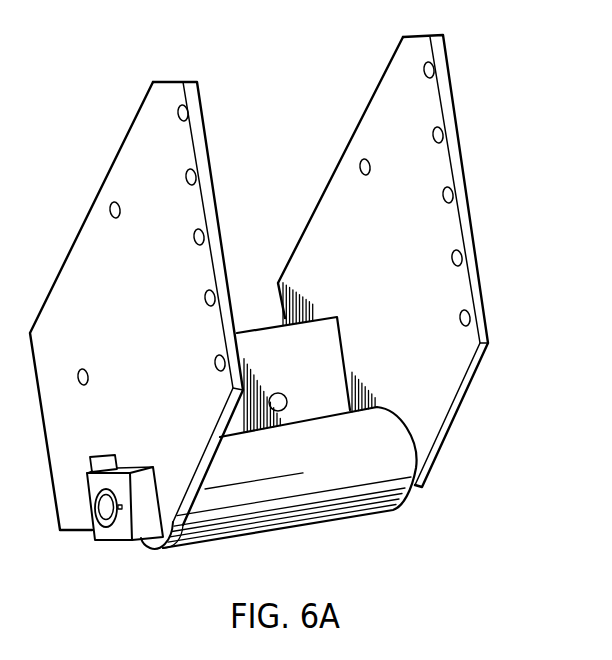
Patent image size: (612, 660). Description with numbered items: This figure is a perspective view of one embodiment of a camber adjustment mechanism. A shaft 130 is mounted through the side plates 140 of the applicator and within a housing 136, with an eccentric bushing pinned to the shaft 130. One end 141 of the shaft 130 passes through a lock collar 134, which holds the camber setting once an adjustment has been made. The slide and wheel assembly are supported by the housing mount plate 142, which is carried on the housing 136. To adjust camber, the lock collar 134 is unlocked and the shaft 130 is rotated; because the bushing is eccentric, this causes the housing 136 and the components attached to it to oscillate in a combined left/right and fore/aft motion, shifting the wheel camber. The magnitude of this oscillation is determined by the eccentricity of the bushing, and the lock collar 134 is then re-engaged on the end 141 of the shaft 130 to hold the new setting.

The shaft 130 is at (117, 545).
The lock collar 134 is at (135, 553).
The housing 136 is at (391, 513).
The side plates 140 is at (197, 488).
The end of the shaft 141 is at (97, 510).
The housing mount plate 142 is at (348, 366).